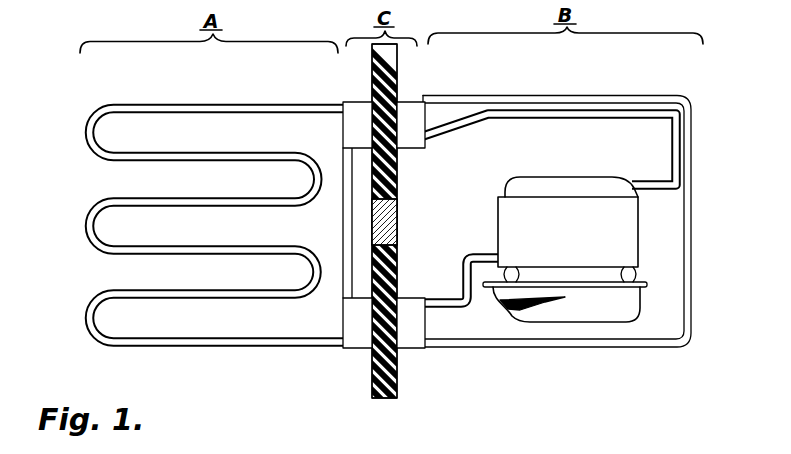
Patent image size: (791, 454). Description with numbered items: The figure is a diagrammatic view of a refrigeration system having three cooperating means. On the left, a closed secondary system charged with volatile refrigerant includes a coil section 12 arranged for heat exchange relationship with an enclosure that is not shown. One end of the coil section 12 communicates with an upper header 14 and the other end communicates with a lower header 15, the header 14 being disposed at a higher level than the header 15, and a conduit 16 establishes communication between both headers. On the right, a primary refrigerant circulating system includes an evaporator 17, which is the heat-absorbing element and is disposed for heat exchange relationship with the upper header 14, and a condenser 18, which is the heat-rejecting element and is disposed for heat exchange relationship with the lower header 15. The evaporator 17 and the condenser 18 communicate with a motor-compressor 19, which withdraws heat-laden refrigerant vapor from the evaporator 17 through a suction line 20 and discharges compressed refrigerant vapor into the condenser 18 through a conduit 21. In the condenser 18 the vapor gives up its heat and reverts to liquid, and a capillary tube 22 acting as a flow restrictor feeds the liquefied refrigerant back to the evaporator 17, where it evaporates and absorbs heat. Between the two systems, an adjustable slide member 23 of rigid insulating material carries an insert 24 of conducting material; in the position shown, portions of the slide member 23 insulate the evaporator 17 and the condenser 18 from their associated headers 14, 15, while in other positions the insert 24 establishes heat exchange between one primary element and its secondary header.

The coil section 12 is at (110, 252).
The upper header 14 is at (359, 103).
The lower header 15 is at (360, 342).
The conduit 16 is at (348, 218).
The evaporator 17 is at (408, 103).
The condenser 18 is at (413, 342).
The motor-compressor 19 is at (501, 217).
The suction line 20 is at (612, 100).
The conduit 21 is at (463, 268).
The capillary tube 22 is at (550, 110).
The adjustable slide member 23 is at (396, 189).
The insert 24 is at (398, 214).